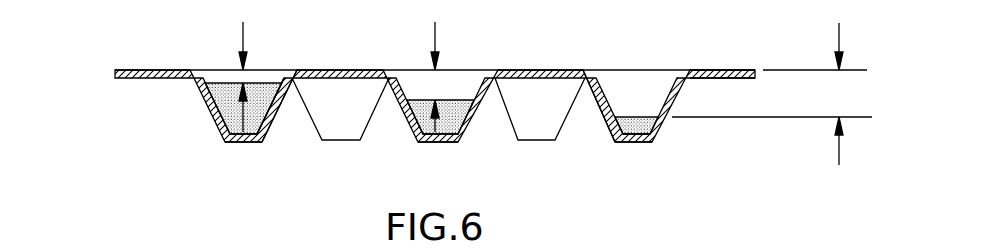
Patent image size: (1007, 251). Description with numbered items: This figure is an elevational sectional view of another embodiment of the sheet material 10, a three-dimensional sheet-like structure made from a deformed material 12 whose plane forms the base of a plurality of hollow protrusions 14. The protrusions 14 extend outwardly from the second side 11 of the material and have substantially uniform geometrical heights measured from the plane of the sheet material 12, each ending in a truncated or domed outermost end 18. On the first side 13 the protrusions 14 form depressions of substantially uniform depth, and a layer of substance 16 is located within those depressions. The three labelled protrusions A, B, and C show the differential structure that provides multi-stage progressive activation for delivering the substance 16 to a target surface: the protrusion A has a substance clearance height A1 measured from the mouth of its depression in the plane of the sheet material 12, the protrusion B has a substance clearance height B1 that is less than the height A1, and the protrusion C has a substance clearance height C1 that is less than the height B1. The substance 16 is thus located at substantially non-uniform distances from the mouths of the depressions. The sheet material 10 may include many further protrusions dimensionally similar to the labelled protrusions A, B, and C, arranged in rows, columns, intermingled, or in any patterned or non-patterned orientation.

The sheet material 10 is at (707, 120).
The second side 11 is at (725, 79).
The deformed material 12 is at (116, 73).
The first side 13 is at (708, 70).
The hollow protrusions 14 is at (282, 117).
The substance 16 is at (218, 93).
The outermost ends 18 is at (635, 143).
The protrusion A is at (243, 143).
The protrusion B is at (442, 143).
The protrusion C is at (607, 120).
The substance clearance height A1 is at (244, 29).
The substance clearance height B1 is at (433, 33).
The substance clearance height C1 is at (840, 31).